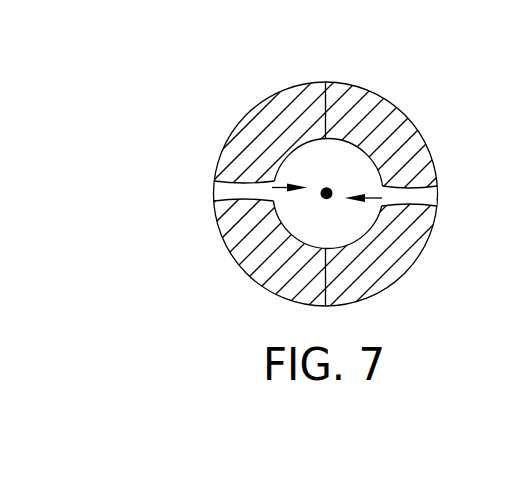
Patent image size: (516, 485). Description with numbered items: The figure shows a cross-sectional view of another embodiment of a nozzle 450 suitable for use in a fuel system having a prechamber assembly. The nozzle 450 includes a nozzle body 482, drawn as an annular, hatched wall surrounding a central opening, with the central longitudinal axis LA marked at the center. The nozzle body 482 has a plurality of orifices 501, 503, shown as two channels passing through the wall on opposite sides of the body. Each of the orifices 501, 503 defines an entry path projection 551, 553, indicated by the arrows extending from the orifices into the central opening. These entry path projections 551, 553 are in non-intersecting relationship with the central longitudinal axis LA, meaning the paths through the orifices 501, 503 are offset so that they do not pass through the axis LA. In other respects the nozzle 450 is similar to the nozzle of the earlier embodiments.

The nozzle 450 is at (161, 90).
The nozzle body 482 is at (247, 275).
The entry path projection 551 is at (278, 174).
The entry path projection 553 is at (398, 110).
The orifice 501 is at (240, 181).
The orifice 503 is at (417, 207).
The central longitudinal axis LA is at (326, 190).